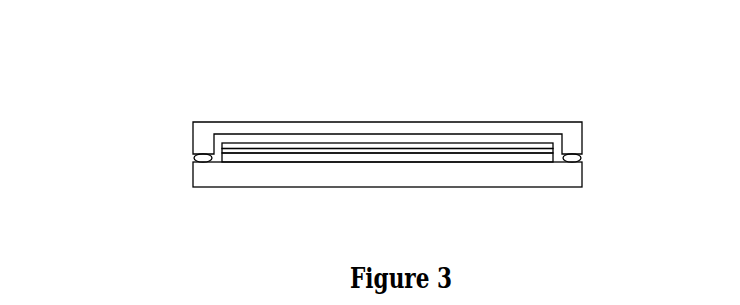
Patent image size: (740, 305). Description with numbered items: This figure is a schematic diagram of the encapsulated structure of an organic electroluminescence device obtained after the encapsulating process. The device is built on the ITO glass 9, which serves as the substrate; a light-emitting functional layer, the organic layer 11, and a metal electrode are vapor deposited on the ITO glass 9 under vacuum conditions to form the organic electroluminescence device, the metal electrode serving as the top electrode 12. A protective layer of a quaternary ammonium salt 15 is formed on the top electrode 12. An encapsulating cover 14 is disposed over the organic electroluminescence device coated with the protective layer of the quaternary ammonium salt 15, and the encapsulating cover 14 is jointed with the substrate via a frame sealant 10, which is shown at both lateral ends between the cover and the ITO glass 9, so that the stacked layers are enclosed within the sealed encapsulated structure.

The ITO glass 9 is at (555, 180).
The frame sealant 10 is at (583, 157).
The organic layer 11 is at (532, 160).
The top electrode 12 is at (387, 153).
The encapsulating cover 14 is at (207, 139).
The protective layer of a quaternary ammonium salt 15 is at (239, 147).